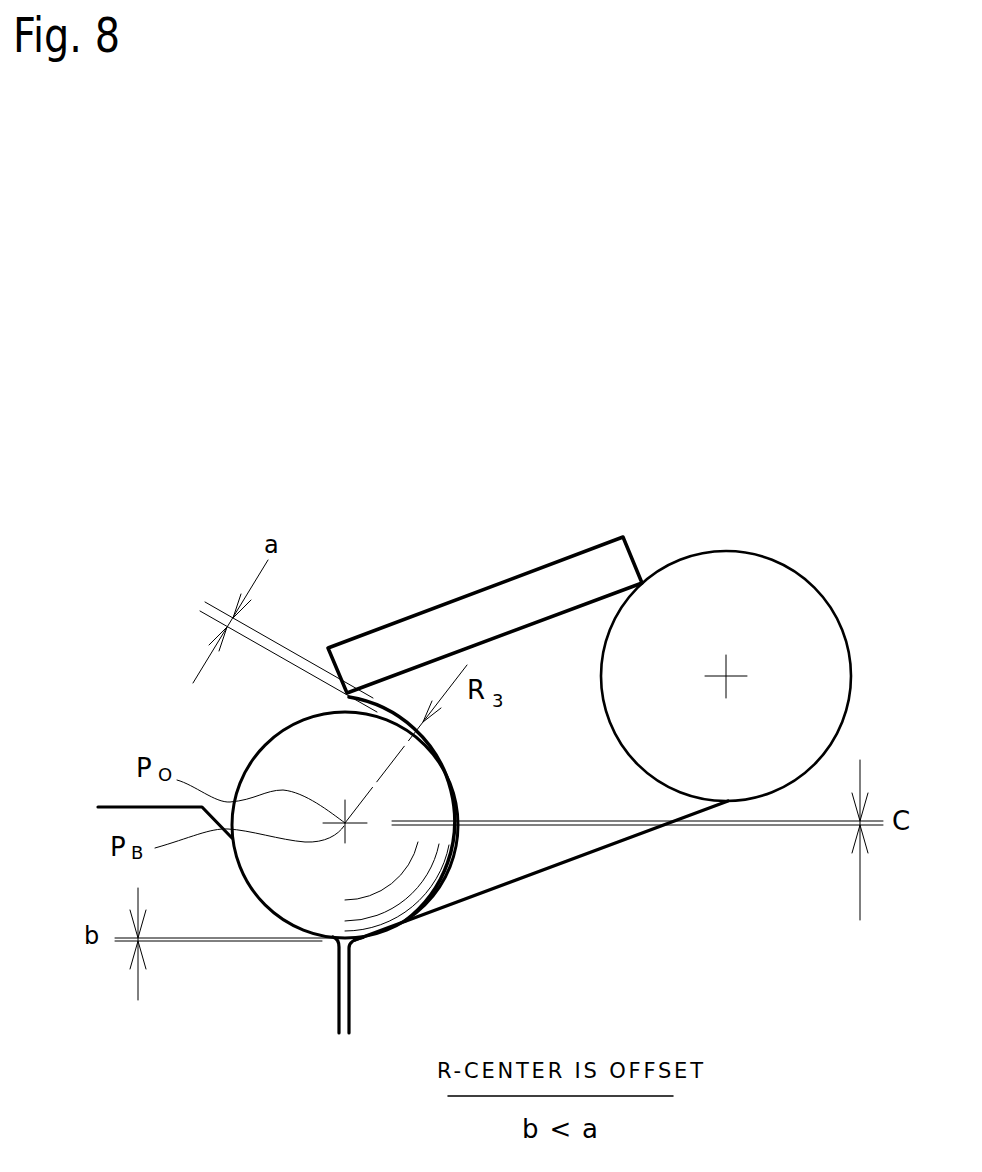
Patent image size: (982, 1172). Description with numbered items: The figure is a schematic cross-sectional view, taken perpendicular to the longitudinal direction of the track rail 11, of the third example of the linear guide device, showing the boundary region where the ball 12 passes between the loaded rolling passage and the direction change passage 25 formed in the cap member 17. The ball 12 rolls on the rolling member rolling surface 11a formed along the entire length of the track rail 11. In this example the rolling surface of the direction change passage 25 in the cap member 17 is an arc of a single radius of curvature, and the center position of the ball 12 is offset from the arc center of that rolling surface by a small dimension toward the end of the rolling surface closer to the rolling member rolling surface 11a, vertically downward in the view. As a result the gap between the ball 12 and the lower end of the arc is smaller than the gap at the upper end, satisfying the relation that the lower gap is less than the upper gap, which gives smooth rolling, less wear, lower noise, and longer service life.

The track rail 11 is at (213, 972).
The rolling member rolling surface 11a is at (280, 906).
The ball 12 is at (285, 752).
The cap member 17 is at (542, 667).
The direction change passage 25 is at (399, 712).